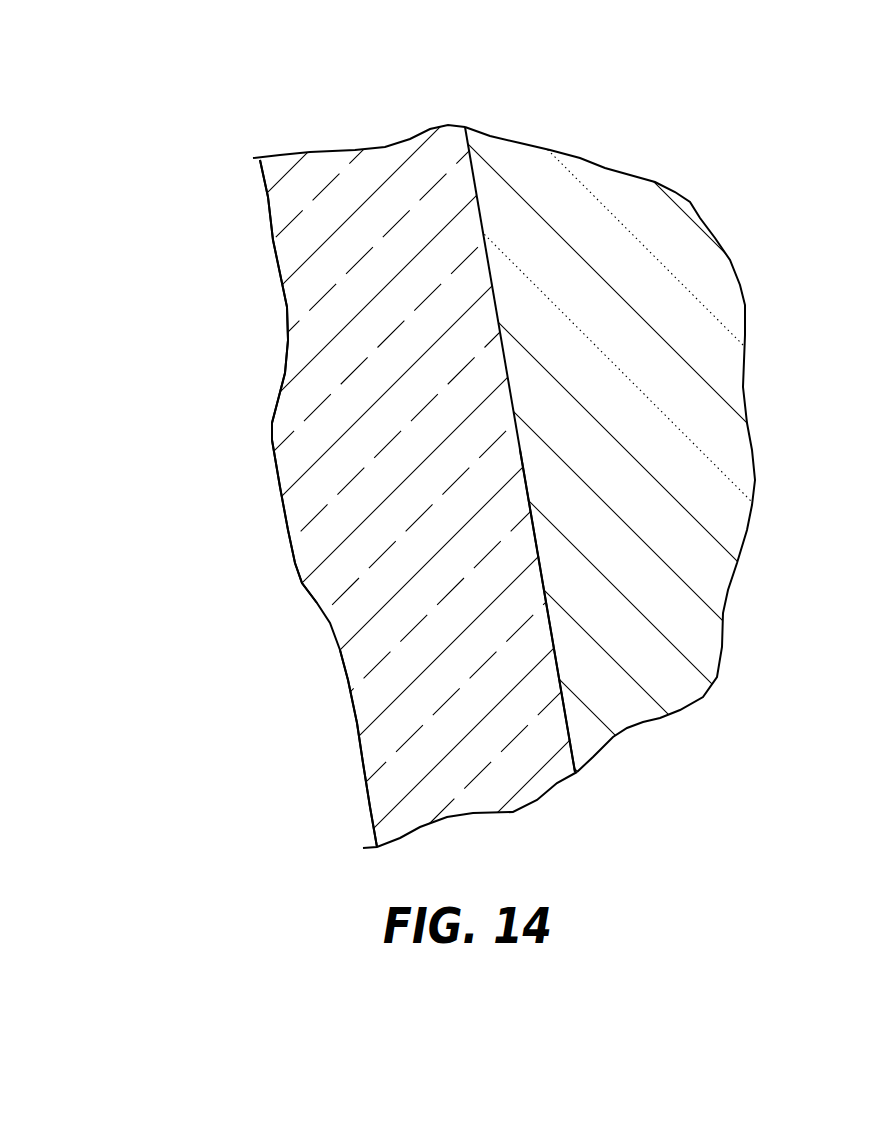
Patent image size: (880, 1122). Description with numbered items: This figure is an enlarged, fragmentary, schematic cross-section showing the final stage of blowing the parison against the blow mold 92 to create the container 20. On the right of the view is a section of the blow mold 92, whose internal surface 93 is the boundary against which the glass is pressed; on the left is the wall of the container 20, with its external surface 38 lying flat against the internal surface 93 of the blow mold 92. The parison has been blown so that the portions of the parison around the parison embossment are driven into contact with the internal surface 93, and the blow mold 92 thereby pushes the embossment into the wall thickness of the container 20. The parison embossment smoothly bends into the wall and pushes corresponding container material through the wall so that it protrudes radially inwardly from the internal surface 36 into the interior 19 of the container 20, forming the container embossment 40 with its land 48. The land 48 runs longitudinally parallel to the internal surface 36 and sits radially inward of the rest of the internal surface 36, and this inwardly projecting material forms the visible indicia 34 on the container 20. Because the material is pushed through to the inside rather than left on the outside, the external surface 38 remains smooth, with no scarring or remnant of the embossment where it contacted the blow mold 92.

The interior 19 is at (226, 636).
The container 20 is at (443, 98).
The indicia 34 is at (125, 482).
The internal surface 36 is at (363, 788).
The external surface 38 is at (552, 635).
The embossment 40 is at (225, 432).
The land 48 is at (278, 488).
The blow mold 92 is at (592, 131).
The internal surface 93 is at (517, 432).